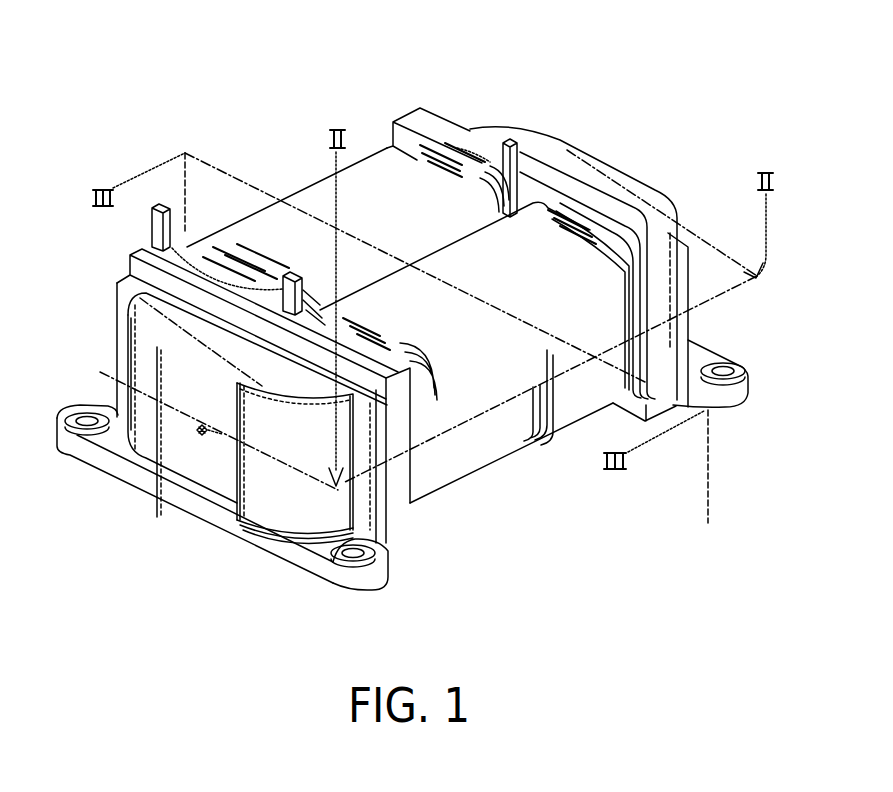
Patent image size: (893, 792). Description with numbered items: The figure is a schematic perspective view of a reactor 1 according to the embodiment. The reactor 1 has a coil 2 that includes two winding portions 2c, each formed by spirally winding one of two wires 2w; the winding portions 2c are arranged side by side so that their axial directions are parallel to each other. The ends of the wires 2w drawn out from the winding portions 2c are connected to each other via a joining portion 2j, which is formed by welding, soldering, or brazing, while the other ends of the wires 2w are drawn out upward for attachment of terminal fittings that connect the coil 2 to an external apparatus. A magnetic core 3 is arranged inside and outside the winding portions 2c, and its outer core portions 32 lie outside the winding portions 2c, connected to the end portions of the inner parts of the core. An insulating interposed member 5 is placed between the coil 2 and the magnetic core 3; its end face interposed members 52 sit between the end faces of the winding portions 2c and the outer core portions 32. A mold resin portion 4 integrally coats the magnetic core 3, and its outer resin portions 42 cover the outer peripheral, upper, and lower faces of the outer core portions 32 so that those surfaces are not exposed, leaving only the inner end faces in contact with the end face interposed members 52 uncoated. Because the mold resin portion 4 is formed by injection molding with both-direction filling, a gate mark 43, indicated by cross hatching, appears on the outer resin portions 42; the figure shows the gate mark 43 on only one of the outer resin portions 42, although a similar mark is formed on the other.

The reactor 1 is at (122, 118).
The coil 2 is at (385, 147).
The winding portions 2c is at (307, 200).
The wires 2w is at (150, 220).
The joining portion 2j is at (474, 133).
The magnetic core 3 is at (451, 364).
The outer core portions 32 is at (574, 135).
The mold resin portion 4 is at (339, 310).
The outer resin portions 42 is at (518, 128).
The gate mark 43 is at (203, 432).
The insulating interposed member 5 is at (402, 318).
The end face interposed members 52 is at (416, 108).